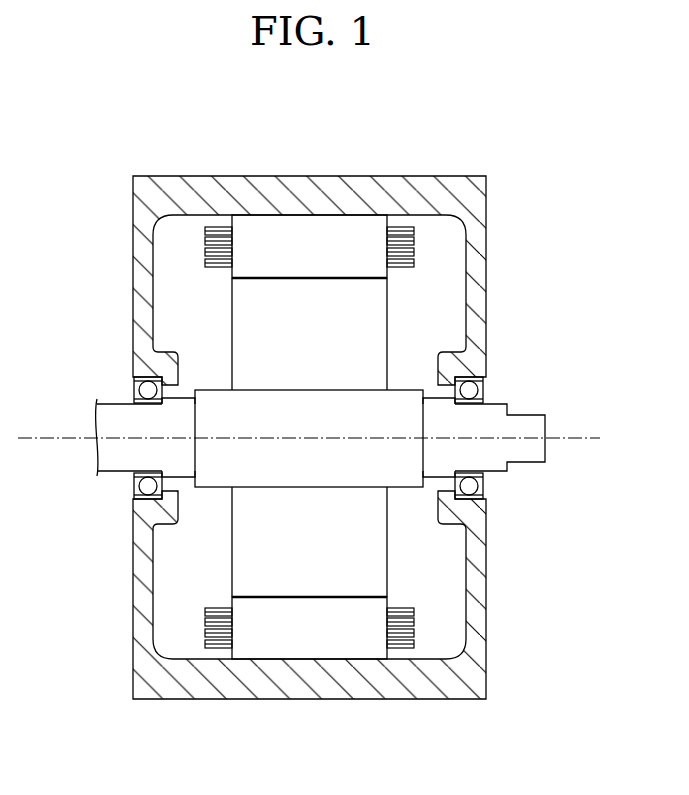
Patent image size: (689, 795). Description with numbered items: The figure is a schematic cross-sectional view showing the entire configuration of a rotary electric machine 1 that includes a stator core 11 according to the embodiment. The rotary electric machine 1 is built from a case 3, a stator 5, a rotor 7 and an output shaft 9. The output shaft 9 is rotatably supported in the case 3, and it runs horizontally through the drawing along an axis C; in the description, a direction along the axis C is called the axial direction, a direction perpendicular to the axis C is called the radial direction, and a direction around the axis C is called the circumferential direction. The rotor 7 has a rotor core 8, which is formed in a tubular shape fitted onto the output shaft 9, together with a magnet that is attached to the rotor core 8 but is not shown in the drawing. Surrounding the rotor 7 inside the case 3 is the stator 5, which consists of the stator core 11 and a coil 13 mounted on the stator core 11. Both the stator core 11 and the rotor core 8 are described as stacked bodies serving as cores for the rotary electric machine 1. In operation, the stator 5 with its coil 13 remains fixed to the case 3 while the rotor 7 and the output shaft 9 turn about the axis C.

The rotary electric machine 1 is at (322, 389).
The case 3 is at (133, 222).
The stator 5 is at (401, 425).
The rotor 7 is at (386, 438).
The rotor core 8 is at (374, 575).
The output shaft 9 is at (112, 470).
The stator core 11 is at (368, 225).
The coil 13 is at (413, 257).
The axis C is at (38, 437).